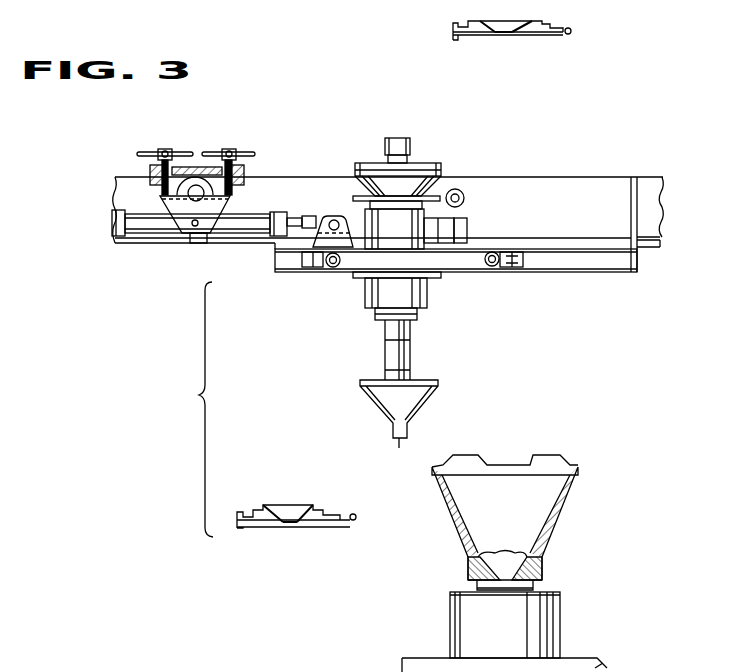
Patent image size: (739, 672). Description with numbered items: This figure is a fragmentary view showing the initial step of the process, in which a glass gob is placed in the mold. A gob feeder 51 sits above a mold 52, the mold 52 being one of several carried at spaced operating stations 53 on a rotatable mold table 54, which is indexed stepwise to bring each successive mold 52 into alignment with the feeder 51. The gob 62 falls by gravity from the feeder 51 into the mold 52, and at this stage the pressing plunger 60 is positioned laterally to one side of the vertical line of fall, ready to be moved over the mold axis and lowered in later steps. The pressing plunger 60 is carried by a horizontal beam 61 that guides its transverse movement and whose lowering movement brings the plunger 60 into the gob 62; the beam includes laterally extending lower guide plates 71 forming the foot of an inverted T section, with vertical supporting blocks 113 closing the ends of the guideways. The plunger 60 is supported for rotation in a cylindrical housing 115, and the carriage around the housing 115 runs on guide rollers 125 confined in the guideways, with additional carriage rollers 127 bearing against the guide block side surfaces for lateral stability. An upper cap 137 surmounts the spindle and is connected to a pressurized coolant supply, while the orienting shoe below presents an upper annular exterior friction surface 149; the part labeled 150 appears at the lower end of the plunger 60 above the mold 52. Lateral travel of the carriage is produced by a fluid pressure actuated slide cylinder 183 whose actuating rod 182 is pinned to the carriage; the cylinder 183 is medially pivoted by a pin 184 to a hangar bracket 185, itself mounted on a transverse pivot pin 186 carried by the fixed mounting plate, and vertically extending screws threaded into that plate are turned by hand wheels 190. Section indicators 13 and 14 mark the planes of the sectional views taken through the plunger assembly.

The section line 13 is at (397, 138).
The section line 14 is at (388, 350).
The gob feeder 51 is at (540, 26).
The mold 52 is at (572, 516).
The operating station 53 is at (560, 620).
The mold table 54 is at (608, 665).
The pressing plunger 60 is at (414, 348).
The horizontal beam 61 is at (552, 184).
The gob 62 is at (493, 550).
The lower guide plate 71 is at (231, 251).
The vertical supporting block 113 is at (275, 268).
The cylindrical housing 115 is at (424, 288).
The guide roller 125 is at (493, 270).
The carriage roller 127 is at (513, 268).
The upper cap 137 is at (410, 140).
The upper annular exterior friction surface 149 is at (442, 168).
The funnel nozzle 150 is at (440, 398).
The actuating rod 182 is at (325, 218).
The slide cylinder 183 is at (240, 217).
The pin 184 is at (190, 236).
The hangar bracket 185 is at (162, 207).
The transverse pivot pin 186 is at (193, 226).
The hand wheel 190 is at (224, 150).